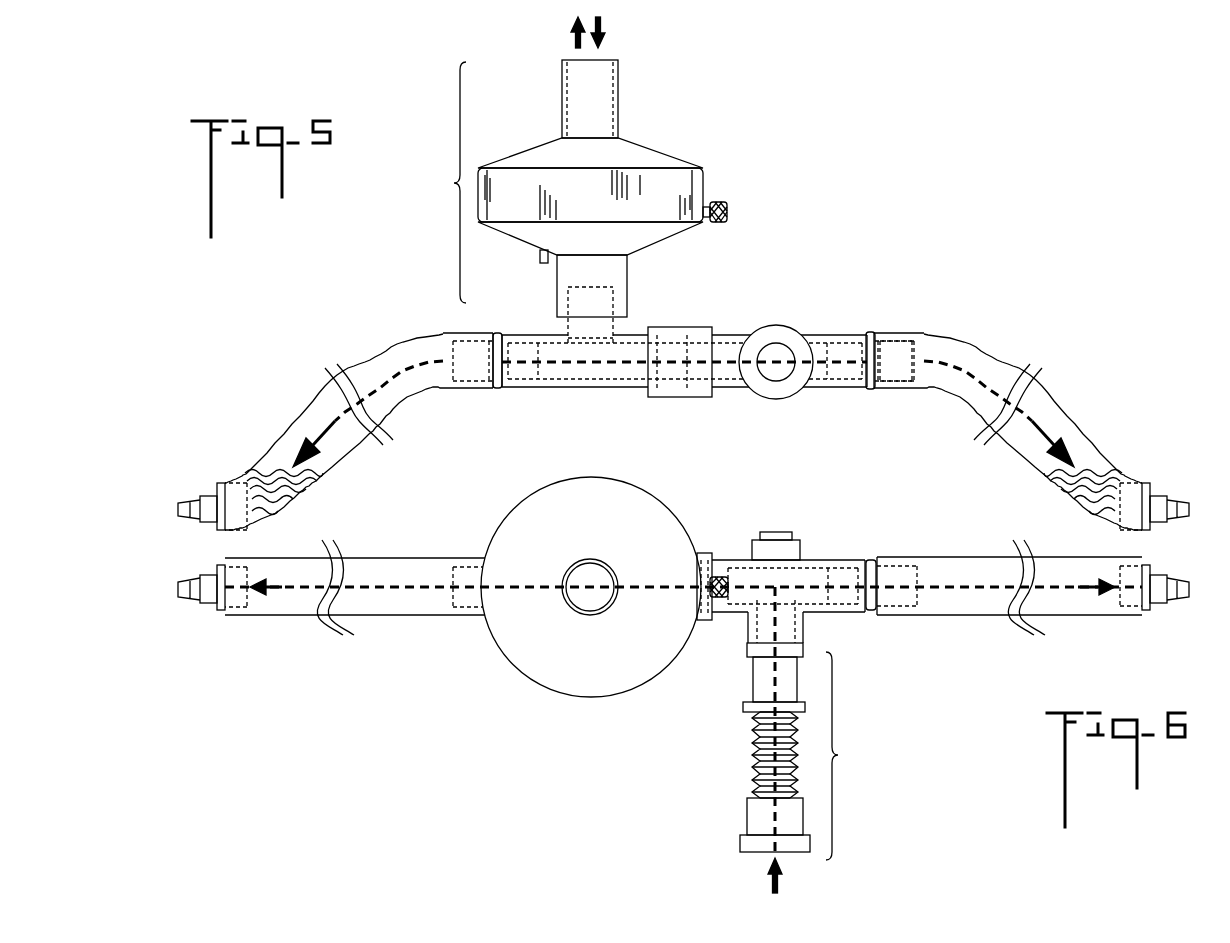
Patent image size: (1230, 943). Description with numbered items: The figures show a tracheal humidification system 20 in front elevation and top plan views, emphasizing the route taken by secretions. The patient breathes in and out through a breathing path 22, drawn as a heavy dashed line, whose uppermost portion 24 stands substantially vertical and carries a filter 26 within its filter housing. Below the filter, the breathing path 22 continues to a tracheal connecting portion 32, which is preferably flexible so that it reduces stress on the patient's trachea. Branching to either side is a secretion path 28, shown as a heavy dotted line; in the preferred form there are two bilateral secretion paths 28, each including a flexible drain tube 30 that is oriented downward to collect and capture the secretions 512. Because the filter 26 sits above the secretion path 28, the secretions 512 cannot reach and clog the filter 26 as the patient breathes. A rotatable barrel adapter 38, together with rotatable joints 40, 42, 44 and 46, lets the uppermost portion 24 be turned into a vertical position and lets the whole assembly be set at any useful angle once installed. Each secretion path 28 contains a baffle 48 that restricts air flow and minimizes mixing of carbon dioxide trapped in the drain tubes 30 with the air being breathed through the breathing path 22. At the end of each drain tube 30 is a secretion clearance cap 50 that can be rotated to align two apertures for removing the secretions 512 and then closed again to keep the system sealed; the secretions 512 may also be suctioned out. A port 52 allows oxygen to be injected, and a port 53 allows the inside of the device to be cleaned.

In FIG. 5, the tracheal humidification system 20 is at (863, 201).
In FIG. 6, the tracheal humidification system 20 is at (736, 505).
In FIG. 5, the breathing path 22 is at (592, 247).
In FIG. 5, the uppermost portion 24 is at (517, 160).
In FIG. 5, the filter 26 is at (605, 188).
In FIG. 6, the filter 26 is at (557, 640).
In FIG. 6, the secretion path 28 is at (653, 592).
In FIG. 5, the flexible drain tube 30 is at (388, 356).
In FIG. 6, the flexible drain tube 30 is at (396, 558).
In FIG. 5, the tracheal connecting portion 32 is at (782, 326).
In FIG. 6, the tracheal connecting portion 32 is at (806, 772).
In FIG. 5, the rotatable barrel adapter 38 is at (700, 327).
In FIG. 6, the rotatable barrel adapter 38 is at (702, 553).
In FIG. 5, the joint 40 is at (627, 297).
In FIG. 5, the joint 42 is at (497, 390).
In FIG. 5, the joint 44 is at (876, 332).
In FIG. 6, the joint 44 is at (871, 560).
In FIG. 6, the joint 46 is at (752, 650).
In FIG. 5, the baffle 48 is at (508, 366).
In FIG. 6, the baffle 48 is at (857, 595).
In FIG. 5, the secretion clearance cap 50 is at (219, 490).
In FIG. 6, the secretion clearance cap 50 is at (214, 604).
In FIG. 5, the port 52 is at (729, 212).
In FIG. 6, the port 52 is at (720, 576).
In FIG. 6, the port 53 is at (800, 548).
In FIG. 5, the secretions 512 is at (283, 468).